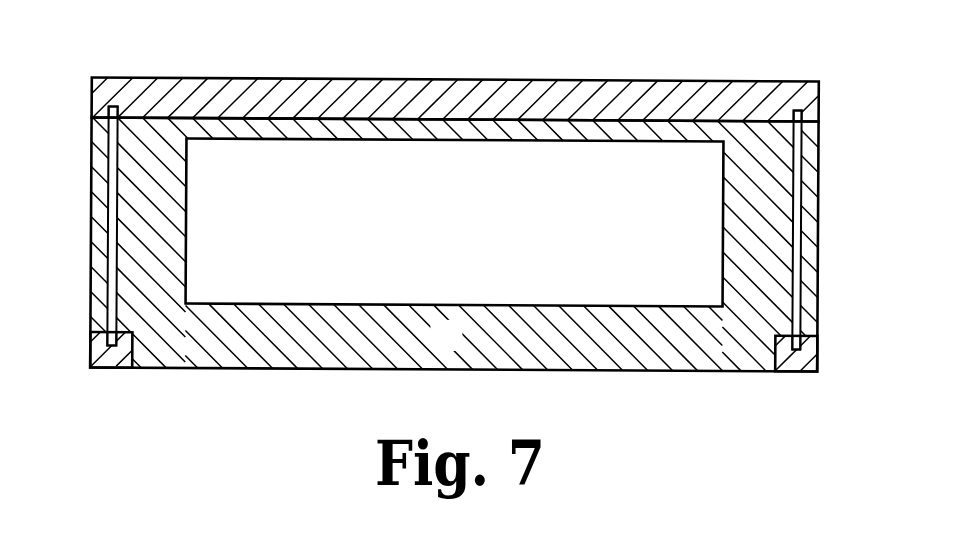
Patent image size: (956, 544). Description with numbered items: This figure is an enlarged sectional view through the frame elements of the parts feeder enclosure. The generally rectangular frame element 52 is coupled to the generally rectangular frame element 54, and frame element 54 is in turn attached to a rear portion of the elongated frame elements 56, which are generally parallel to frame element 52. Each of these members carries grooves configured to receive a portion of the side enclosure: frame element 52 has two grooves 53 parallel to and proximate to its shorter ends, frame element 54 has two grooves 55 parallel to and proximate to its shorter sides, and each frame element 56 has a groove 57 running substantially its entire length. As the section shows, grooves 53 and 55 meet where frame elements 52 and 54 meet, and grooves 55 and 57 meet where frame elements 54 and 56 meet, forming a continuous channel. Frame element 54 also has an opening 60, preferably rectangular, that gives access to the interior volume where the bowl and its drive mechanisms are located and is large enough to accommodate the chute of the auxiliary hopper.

The frame element 52 is at (342, 79).
The grooves 53 is at (108, 113).
The frame element 54 is at (459, 348).
The grooves 55 is at (110, 215).
The frame elements 56 is at (107, 362).
The groove 57 is at (113, 341).
The opening 60 is at (542, 183).